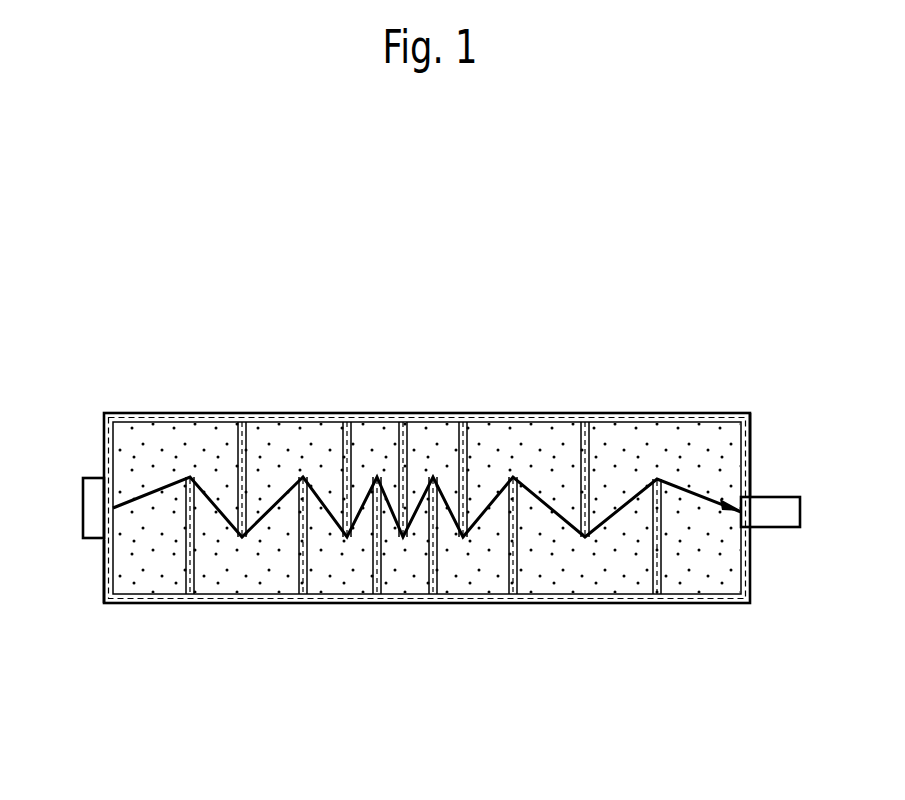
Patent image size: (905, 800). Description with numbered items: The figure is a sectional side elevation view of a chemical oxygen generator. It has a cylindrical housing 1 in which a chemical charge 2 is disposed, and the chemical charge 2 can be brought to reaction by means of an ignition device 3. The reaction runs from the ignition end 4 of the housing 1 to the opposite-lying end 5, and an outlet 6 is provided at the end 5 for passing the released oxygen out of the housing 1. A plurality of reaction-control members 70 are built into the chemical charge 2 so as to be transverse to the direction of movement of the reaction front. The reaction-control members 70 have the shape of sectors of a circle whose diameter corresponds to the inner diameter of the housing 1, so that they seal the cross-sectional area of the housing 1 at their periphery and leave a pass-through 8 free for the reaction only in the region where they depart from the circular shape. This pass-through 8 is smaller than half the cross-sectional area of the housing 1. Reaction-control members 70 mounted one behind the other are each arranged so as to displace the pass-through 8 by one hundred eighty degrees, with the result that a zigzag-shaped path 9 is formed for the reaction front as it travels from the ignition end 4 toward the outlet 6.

The housing 1 is at (633, 414).
The chemical charge 2 is at (150, 430).
The ignition device 3 is at (92, 505).
The ignition end 4 is at (105, 567).
The opposite-lying end 5 is at (752, 455).
The outlet 6 is at (788, 528).
The pass-through 8 is at (188, 440).
The zigzag-shaped path 9 is at (675, 485).
The reaction-control members 70 is at (243, 443).